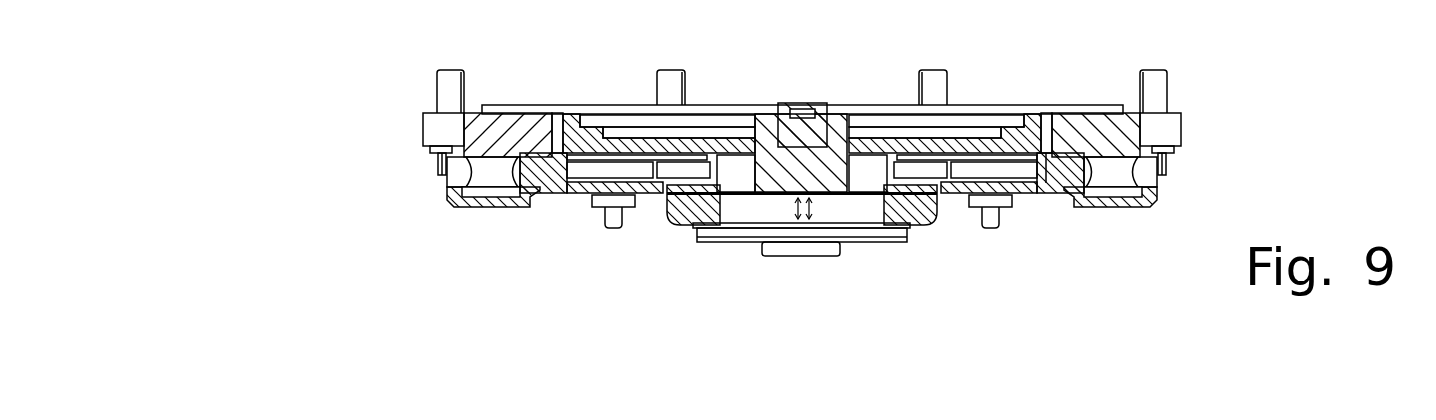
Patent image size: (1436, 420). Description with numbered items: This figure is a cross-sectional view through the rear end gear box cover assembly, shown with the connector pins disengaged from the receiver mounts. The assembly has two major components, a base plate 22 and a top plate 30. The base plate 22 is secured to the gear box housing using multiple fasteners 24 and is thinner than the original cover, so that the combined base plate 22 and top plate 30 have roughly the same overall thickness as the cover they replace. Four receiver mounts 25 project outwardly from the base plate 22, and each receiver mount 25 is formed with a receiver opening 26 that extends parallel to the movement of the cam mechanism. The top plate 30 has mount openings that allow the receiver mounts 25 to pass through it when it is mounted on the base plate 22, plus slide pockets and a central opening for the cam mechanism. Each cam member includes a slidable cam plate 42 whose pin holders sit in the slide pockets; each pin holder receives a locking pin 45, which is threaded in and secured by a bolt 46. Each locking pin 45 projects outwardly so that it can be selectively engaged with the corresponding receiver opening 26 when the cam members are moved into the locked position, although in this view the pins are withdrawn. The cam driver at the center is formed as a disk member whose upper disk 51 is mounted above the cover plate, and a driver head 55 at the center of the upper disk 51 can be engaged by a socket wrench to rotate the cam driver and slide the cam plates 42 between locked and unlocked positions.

The base plate 22 is at (1032, 130).
The fasteners 24 is at (445, 97).
The receiver mounts 25 is at (484, 200).
The receiver opening 26 is at (488, 173).
The top plate 30 is at (577, 195).
The cam plate 42 is at (683, 215).
The locking pin 45 is at (1052, 173).
The bolt 46 is at (727, 182).
The upper disk 51 is at (913, 237).
The driver head 55 is at (813, 257).